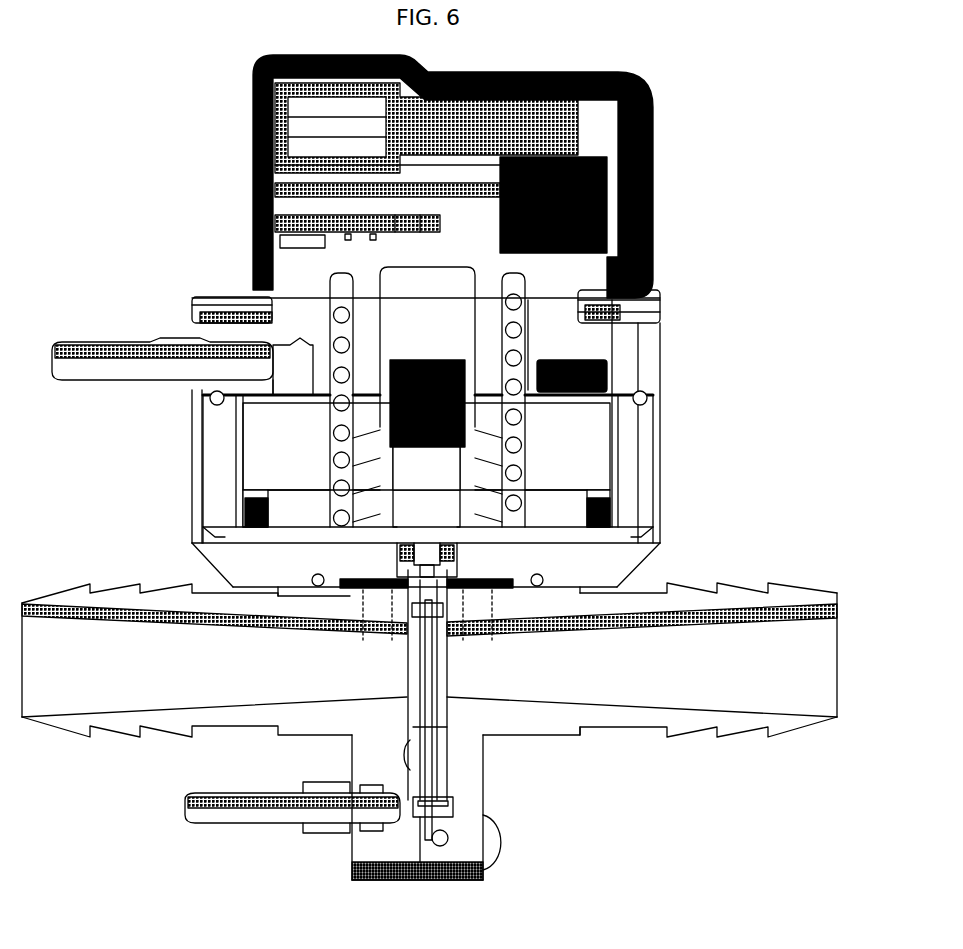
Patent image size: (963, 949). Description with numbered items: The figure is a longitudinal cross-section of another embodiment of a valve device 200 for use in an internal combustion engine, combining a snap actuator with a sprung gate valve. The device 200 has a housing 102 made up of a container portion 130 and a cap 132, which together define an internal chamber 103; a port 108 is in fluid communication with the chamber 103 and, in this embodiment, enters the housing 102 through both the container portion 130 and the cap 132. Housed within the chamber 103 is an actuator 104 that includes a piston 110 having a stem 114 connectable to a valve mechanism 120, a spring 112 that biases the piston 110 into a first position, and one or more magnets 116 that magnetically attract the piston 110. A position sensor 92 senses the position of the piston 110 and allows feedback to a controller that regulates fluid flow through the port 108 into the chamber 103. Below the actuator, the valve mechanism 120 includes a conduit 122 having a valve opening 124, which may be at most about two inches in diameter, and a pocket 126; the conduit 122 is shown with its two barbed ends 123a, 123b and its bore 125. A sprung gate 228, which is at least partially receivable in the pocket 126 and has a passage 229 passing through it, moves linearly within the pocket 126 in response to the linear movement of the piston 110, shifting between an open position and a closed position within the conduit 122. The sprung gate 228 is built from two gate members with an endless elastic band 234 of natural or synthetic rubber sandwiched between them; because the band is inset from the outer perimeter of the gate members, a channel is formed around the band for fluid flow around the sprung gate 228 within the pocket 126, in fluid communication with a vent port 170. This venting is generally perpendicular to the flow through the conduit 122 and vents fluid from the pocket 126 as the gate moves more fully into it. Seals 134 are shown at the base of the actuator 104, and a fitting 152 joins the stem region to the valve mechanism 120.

The valve device 200 is at (705, 283).
The port 108 is at (160, 340).
The cap 132 is at (320, 307).
The position sensor 92 is at (397, 240).
The spring 112 is at (520, 328).
The housing 102 is at (617, 342).
The magnets 116 is at (608, 377).
The internal chamber 103 is at (260, 427).
The stem 114 is at (463, 468).
The actuator 104 is at (590, 450).
The container portion 130 is at (202, 510).
The seal 134 is at (610, 513).
The fitting 152 is at (420, 560).
The piston 110 is at (560, 523).
The left barbed end 123b is at (97, 587).
The right barbed end 123a is at (758, 592).
The valve opening 124 is at (406, 671).
The passage 229 is at (438, 678).
The flow bore 125 is at (542, 696).
The valve mechanism 120 is at (392, 706).
The sprung gate 228 is at (440, 723).
The pocket 126 is at (415, 727).
The conduit 122 is at (600, 721).
The vent port 170 is at (233, 827).
The endless elastic band 234 is at (427, 805).